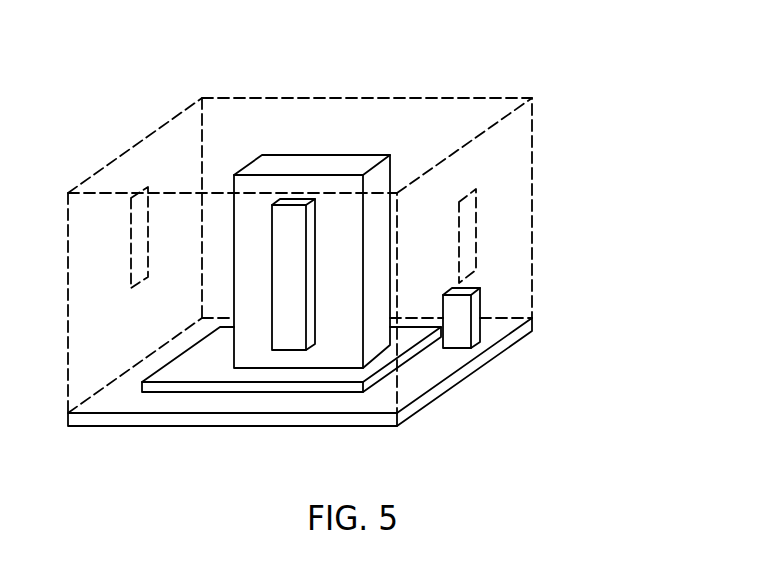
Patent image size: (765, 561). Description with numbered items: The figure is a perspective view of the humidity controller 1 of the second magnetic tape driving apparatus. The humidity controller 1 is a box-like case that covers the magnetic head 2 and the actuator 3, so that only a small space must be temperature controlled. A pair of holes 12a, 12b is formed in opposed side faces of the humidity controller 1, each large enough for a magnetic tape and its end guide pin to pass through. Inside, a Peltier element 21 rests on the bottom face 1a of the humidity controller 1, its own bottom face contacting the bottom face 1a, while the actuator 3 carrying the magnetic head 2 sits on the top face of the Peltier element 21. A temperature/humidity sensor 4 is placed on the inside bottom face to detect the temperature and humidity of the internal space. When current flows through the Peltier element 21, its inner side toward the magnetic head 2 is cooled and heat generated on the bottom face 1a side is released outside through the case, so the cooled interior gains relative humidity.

The humidity controller 1 is at (440, 98).
The bottom face 1a is at (423, 368).
The magnetic head 2 is at (287, 342).
The actuator 3 is at (342, 358).
The temperature/humidity sensor 4 is at (490, 328).
The hole 12a is at (131, 253).
The hole 12b is at (476, 223).
The Peltier element 21 is at (208, 373).